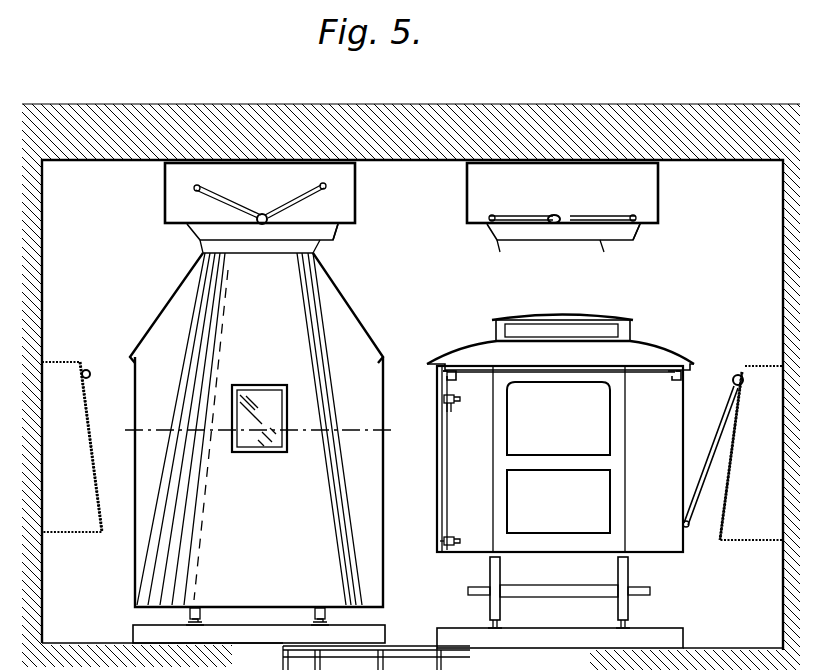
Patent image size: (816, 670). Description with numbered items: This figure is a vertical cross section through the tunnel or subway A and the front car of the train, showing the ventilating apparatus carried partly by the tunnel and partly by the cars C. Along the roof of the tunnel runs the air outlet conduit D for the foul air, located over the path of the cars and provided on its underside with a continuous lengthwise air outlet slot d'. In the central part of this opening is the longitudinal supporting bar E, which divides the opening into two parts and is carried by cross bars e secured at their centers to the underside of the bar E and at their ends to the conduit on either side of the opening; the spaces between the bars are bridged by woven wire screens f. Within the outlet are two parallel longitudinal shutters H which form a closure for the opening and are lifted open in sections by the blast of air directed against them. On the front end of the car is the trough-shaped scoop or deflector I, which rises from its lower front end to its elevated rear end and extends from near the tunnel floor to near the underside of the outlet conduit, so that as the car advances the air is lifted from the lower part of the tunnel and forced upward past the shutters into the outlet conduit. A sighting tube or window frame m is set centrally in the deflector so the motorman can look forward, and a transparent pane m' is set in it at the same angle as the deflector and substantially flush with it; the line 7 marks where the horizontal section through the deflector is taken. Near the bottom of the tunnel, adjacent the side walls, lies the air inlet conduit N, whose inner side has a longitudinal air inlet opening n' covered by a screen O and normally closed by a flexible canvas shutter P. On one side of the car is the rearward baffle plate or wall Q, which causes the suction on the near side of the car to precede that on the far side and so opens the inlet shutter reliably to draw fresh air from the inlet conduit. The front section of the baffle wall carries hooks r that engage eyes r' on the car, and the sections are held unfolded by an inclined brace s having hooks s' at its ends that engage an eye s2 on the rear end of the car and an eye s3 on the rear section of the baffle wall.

The tunnel or subway A is at (740, 279).
The air outlet conduit D is at (262, 186).
The longitudinal shutters or valves H is at (415, 202).
The supporting bar E is at (262, 224).
The cross bars e is at (194, 233).
The air outlet slot or elongated opening d' is at (494, 242).
The screens f is at (200, 236).
The cars C is at (412, 430).
The scoop or deflector I is at (223, 520).
The sighting tube or window frame m is at (275, 418).
The transparent pane m' is at (254, 368).
The section line 7- 7 is at (257, 431).
The baffle plate or wall Q is at (442, 468).
The hooks r is at (448, 470).
The eyes r' is at (467, 475).
The inclined brace s is at (561, 358).
The hooks s' is at (562, 389).
The eye s2 is at (681, 370).
The eye s3 is at (443, 373).
The air inlet conduit N is at (762, 496).
The screen O is at (83, 428).
The valve or shutter P is at (419, 456).
The air inlet opening n' is at (413, 449).